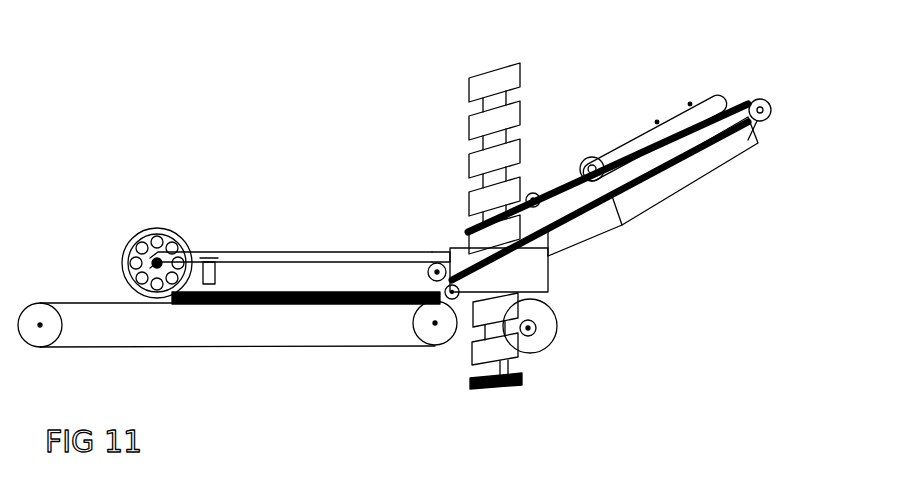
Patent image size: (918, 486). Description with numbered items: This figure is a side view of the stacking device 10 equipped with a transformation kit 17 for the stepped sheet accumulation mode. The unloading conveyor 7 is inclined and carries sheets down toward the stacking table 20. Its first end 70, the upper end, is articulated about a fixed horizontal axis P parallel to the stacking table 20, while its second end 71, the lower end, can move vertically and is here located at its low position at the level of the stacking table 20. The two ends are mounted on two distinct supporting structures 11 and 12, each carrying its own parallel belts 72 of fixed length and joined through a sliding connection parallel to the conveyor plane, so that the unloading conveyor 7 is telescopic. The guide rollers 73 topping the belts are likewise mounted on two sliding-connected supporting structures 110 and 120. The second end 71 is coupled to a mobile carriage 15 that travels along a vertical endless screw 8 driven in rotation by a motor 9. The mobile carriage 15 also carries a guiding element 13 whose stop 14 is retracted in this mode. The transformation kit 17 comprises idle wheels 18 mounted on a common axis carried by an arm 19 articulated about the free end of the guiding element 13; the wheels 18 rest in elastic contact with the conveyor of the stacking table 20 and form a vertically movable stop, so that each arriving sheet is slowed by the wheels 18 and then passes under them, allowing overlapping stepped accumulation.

The stacking device 10 is at (208, 140).
The vertical endless screw 8 is at (462, 120).
The transformation kit 17 is at (120, 220).
The idle wheels 18 is at (114, 262).
The arm 19 is at (185, 238).
The stop 14 is at (215, 258).
The guiding element 13 is at (300, 250).
The mobile carriage 15 is at (452, 248).
The guide rollers 73 is at (530, 194).
The supporting structure 110 is at (580, 160).
The supporting structure 120 is at (664, 116).
The fixed horizontal axis P is at (768, 100).
The first end 70 is at (772, 123).
The supporting structure 12 is at (700, 163).
The unloading conveyor 7 is at (737, 175).
The supporting structure 11 is at (586, 218).
The parallel belts 72 is at (552, 262).
The motor 9 is at (540, 352).
The second end 71 is at (458, 300).
The stacking table 20 is at (312, 348).